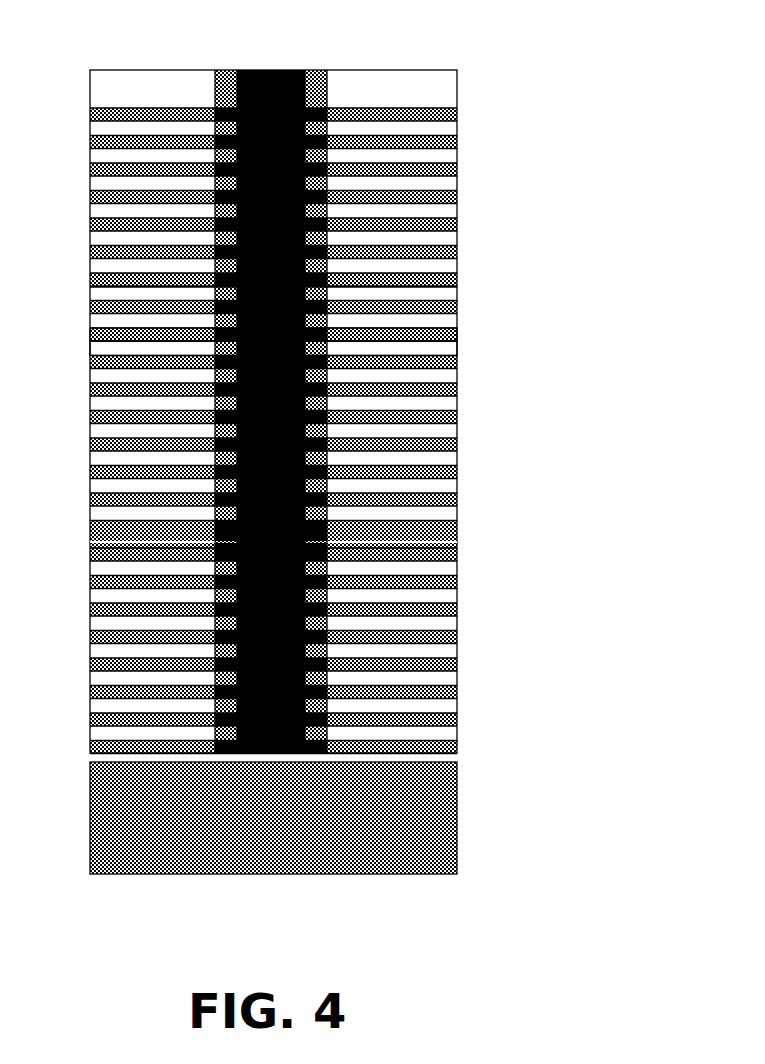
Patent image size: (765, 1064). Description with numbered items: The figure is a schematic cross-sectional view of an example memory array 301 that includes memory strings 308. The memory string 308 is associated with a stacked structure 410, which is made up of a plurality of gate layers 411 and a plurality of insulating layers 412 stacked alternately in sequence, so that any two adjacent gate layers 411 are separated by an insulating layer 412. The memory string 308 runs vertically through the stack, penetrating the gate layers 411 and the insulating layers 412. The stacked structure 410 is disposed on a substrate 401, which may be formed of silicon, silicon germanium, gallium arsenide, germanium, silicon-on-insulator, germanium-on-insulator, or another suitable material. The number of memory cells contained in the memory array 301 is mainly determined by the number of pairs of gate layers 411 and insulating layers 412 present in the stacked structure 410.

The memory array 301 is at (285, 26).
The memory string 308 is at (313, 67).
The substrate 401 is at (313, 844).
The stacked structure 410 is at (90, 109).
The gate layer 411 is at (90, 328).
The insulating layer 412 is at (90, 349).